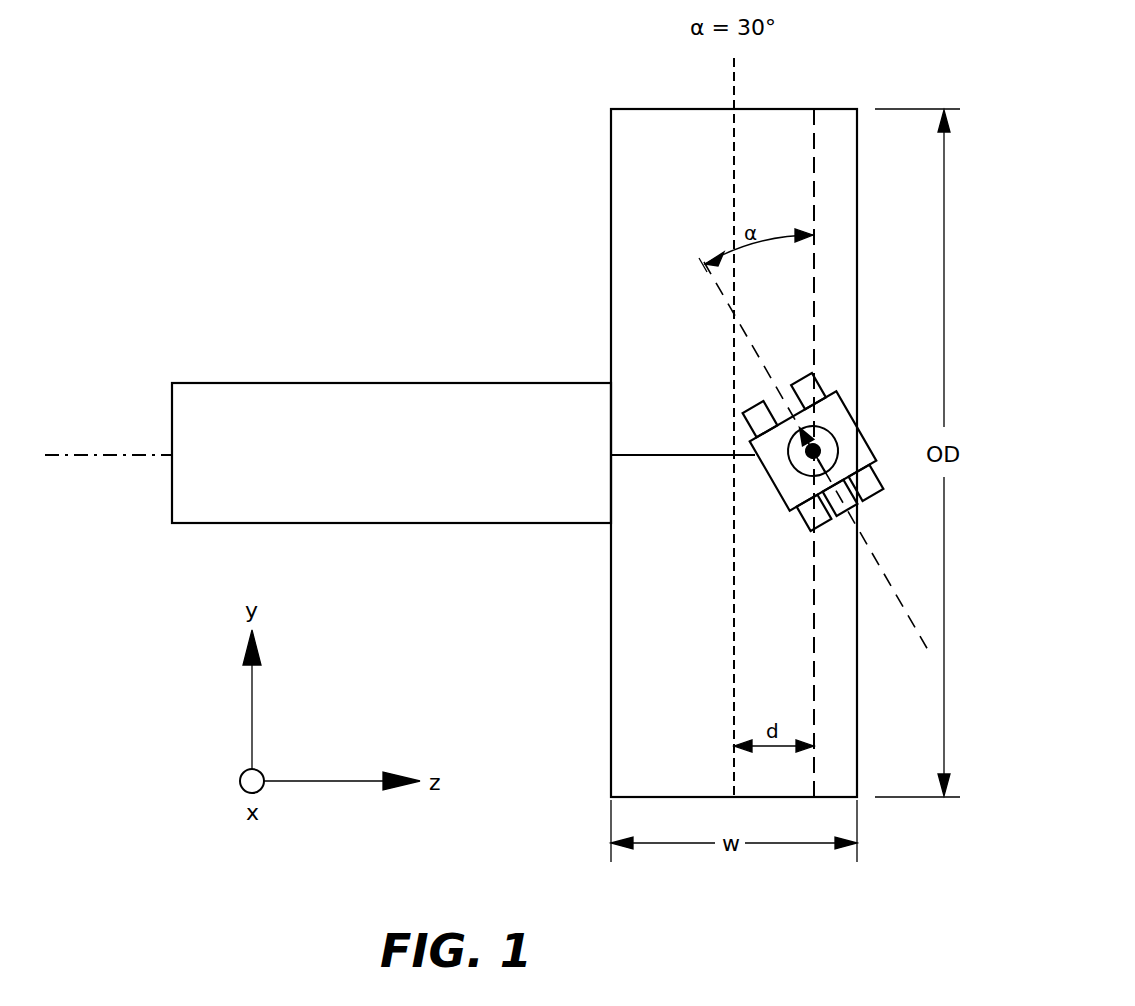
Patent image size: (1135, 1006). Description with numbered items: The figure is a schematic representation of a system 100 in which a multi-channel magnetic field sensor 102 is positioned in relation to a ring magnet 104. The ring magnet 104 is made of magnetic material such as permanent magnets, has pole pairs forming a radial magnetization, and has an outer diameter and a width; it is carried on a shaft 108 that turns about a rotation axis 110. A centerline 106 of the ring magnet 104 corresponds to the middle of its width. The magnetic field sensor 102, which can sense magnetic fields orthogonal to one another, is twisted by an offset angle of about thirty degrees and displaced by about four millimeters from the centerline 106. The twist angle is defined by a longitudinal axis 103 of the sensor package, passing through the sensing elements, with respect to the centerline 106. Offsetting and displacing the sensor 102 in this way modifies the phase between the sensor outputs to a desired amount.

The system 100 is at (418, 120).
The multi-channel magnetic field sensor 102 is at (855, 452).
The longitudinal axis 103 is at (902, 600).
The ring magnet 104 is at (611, 203).
The centerline of the ring magnet 106 is at (734, 82).
The shaft 108 is at (242, 383).
The rotation axis 110 is at (91, 455).